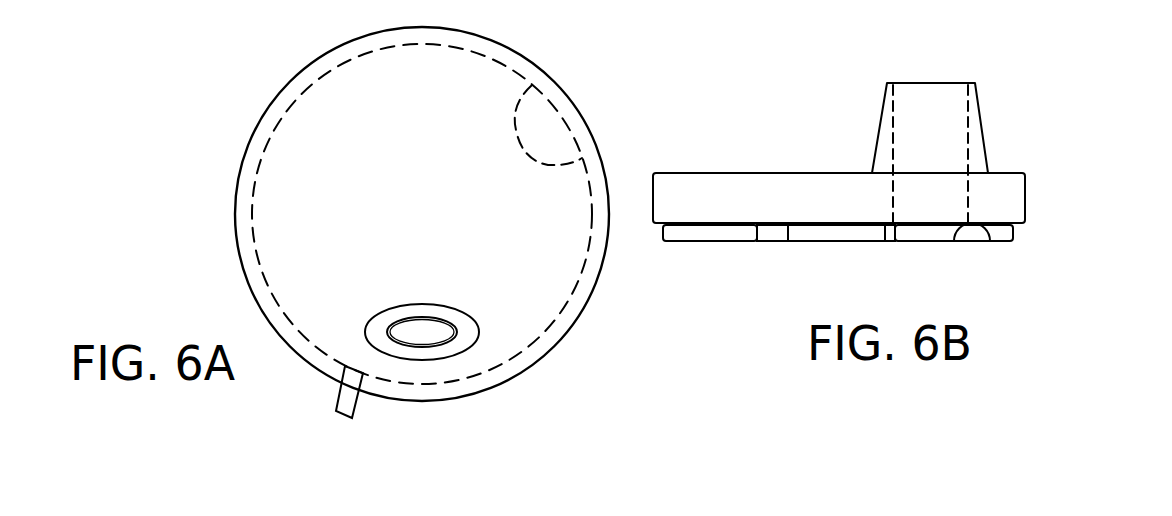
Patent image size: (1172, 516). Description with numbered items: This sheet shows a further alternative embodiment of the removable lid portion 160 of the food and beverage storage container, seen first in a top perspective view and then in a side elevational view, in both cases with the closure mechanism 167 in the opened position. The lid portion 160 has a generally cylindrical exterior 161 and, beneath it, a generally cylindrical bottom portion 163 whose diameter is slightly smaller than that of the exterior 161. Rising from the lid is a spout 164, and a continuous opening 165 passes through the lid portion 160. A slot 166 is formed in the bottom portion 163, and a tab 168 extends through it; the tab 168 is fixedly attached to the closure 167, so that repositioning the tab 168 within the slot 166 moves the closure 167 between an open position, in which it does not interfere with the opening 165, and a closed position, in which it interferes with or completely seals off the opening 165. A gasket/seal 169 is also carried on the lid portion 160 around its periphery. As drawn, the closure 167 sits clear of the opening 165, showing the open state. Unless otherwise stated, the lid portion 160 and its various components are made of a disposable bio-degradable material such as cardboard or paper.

In FIG. 6A, the removable lid portion 160 is at (245, 118).
In FIG. 6B, the removable lid portion 160 is at (774, 76).
In FIG. 6A, the generally cylindrical exterior 161 is at (572, 103).
In FIG. 6B, the generally cylindrical exterior 161 is at (647, 193).
In FIG. 6B, the bottom portion 163 is at (728, 241).
In FIG. 6A, the spout 164 is at (468, 327).
In FIG. 6B, the spout 164 is at (978, 107).
In FIG. 6A, the continuous opening 165 is at (440, 343).
In FIG. 6B, the continuous opening 165 is at (938, 83).
In FIG. 6B, the slot 166 is at (963, 227).
In FIG. 6B, the closure mechanism 167 is at (860, 233).
In FIG. 6A, the tab 168 is at (345, 410).
In FIG. 6B, the tab 168 is at (768, 230).
In FIG. 6A, the gasket/seal 169 is at (600, 138).
In FIG. 6B, the gasket/seal 169 is at (663, 238).